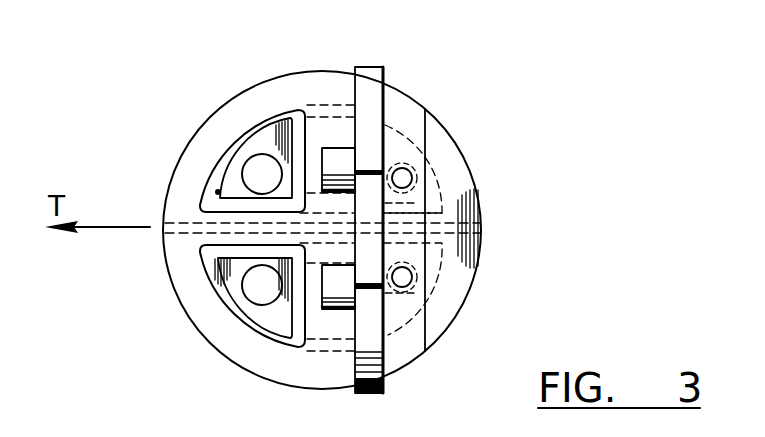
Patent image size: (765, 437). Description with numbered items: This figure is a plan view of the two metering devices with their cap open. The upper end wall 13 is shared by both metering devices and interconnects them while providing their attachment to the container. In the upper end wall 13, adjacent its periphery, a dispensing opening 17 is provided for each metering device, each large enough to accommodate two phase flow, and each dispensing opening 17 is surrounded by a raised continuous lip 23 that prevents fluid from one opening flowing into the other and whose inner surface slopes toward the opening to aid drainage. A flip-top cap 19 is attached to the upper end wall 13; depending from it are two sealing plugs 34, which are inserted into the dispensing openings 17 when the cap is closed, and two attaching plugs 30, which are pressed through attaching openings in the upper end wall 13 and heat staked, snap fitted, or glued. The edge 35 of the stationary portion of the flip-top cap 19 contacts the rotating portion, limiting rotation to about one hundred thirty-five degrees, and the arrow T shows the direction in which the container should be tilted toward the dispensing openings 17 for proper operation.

The upper end wall 13 is at (322, 230).
The dispensing opening 17 is at (255, 183).
The flip-top cap 19 is at (370, 100).
The raised continuous lip 23 is at (235, 146).
The attaching plug 30 is at (400, 290).
The sealing plug 34 is at (343, 155).
The edge of the stationary portion of the flip-top cap 35 is at (425, 145).